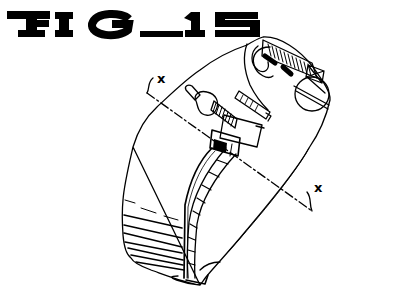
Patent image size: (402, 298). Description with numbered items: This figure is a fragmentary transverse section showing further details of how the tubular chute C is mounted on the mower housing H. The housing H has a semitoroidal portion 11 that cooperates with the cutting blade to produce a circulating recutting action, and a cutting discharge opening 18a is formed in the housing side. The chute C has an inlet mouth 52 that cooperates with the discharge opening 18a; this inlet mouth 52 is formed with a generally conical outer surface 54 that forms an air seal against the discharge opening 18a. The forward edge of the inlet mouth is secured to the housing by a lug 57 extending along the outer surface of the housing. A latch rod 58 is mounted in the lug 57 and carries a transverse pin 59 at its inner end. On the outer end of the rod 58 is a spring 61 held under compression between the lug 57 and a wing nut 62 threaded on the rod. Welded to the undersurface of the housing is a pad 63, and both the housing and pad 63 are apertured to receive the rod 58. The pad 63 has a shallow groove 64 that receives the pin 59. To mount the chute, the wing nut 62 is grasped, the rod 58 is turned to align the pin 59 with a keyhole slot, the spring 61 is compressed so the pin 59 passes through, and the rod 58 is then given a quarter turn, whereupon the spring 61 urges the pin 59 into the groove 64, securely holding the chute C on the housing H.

The semitoroidal portion 11 is at (197, 274).
The cutting discharge opening 18a is at (322, 110).
The inlet mouth 52 is at (272, 68).
The conical outer surface 54 is at (324, 73).
The lug 57 is at (238, 120).
The latch rod 58 is at (250, 147).
The transverse pin 59 is at (232, 150).
The spring 61 is at (197, 120).
The wing nut 62 is at (209, 101).
The pad 63 is at (263, 117).
The shallow groove 64 is at (263, 123).
The tubular chute C is at (201, 161).
The housing H is at (324, 61).